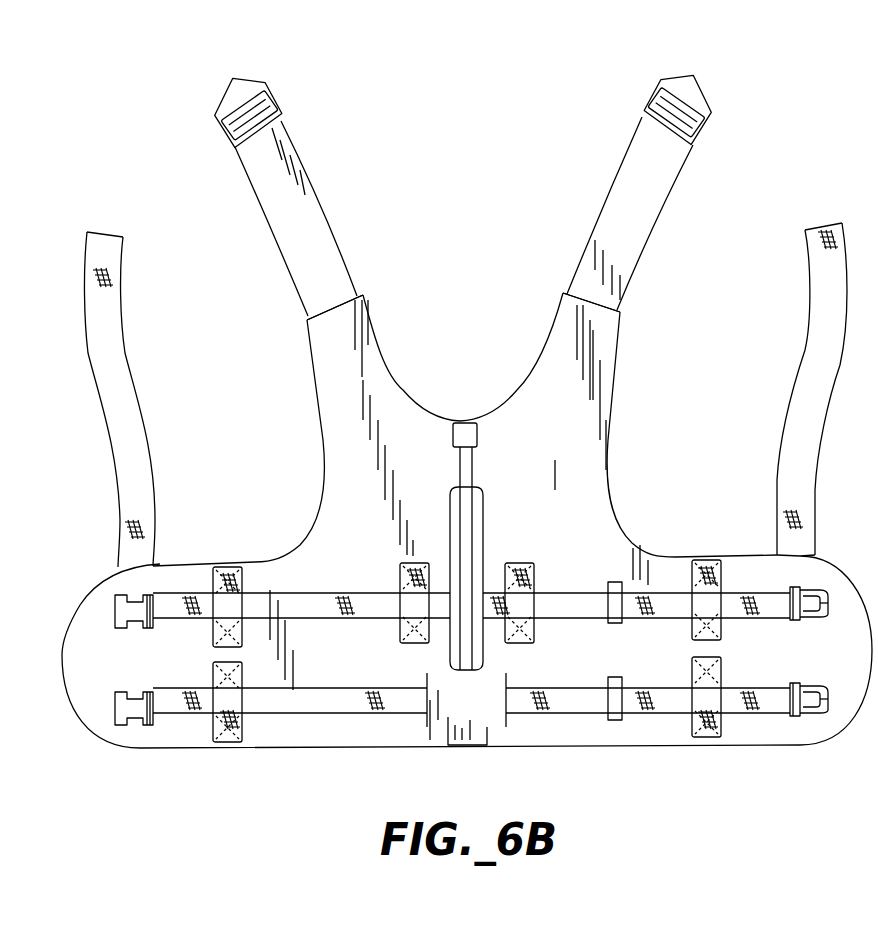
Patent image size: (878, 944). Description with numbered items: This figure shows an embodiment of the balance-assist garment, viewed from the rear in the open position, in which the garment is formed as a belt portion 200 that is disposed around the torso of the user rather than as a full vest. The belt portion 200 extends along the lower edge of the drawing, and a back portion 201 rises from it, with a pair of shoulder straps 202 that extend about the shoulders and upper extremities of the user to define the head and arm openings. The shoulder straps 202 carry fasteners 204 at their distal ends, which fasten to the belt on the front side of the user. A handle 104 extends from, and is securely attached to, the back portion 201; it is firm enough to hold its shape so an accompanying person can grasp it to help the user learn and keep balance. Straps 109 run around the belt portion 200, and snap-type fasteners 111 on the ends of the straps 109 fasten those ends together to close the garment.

The fasteners 204 is at (217, 105).
The shoulder straps 202 is at (553, 323).
The handle 104 is at (472, 458).
The back portion 201 is at (598, 497).
The belt portion 200 is at (97, 578).
The straps 109 is at (290, 700).
The snap-type fasteners 111 is at (115, 612).